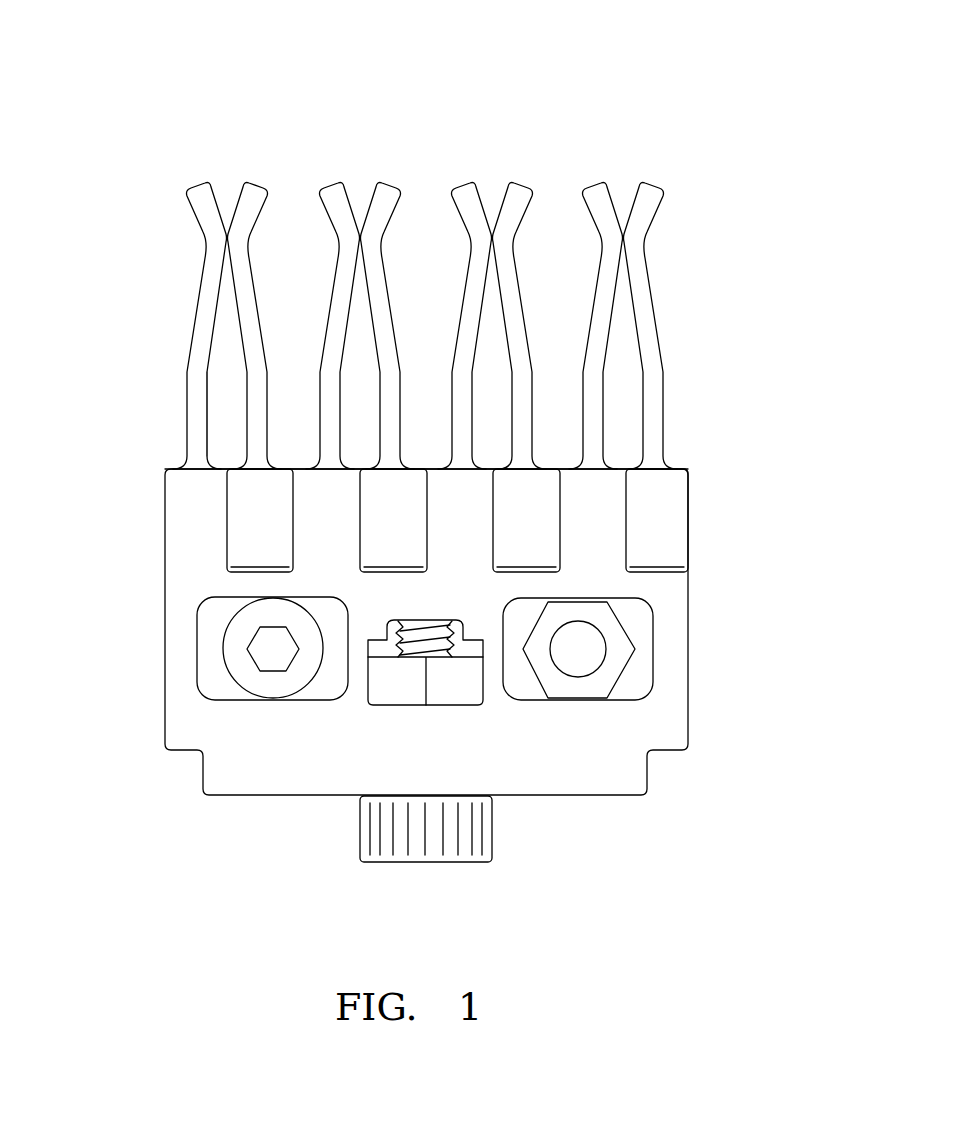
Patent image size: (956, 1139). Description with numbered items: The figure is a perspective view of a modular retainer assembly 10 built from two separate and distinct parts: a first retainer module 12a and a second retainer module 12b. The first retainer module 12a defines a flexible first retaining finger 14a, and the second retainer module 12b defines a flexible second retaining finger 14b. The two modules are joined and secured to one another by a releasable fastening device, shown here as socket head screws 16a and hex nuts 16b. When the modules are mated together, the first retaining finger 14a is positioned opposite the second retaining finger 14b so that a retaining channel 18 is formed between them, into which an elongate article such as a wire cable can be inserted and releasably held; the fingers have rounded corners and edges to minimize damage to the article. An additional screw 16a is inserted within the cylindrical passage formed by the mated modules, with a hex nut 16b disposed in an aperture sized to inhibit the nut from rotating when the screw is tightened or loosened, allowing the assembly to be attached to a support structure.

The modular retainer assembly 10 is at (311, 84).
The first retainer module 12a is at (178, 706).
The second retainer module 12b is at (667, 532).
The first retaining finger 14a is at (193, 425).
The second retaining finger 14b is at (243, 303).
The socket head screw 16a is at (240, 633).
The hex nut 16b is at (612, 673).
The retaining channel 18 is at (225, 397).